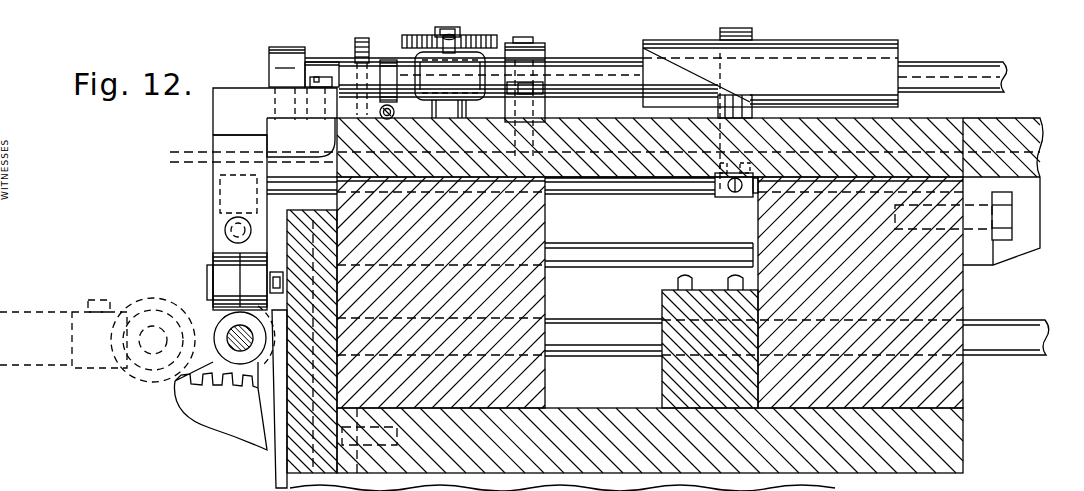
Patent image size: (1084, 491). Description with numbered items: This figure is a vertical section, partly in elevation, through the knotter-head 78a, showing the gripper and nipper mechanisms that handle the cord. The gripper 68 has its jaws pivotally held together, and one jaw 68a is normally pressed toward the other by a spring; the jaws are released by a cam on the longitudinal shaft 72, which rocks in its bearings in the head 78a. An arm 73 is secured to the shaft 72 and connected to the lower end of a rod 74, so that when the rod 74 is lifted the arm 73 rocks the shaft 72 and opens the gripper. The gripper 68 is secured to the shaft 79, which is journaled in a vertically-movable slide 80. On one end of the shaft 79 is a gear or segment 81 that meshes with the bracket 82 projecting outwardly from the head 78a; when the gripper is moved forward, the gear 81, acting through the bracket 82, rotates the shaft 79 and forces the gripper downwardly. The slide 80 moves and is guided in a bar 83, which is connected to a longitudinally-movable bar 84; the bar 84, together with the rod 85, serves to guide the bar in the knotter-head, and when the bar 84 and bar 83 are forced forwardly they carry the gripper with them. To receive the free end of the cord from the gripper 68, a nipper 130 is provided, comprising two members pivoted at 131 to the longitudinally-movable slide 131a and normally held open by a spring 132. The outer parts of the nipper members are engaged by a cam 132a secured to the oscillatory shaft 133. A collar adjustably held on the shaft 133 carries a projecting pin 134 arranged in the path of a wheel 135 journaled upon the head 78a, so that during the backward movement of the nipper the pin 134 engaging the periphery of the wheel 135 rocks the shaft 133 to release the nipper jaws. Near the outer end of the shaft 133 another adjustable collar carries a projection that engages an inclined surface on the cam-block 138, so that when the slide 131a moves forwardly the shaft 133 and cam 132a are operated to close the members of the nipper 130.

The gripper 68 is at (213, 199).
The gripper jaw 68a is at (253, 278).
The longitudinal shaft 72 is at (590, 188).
The arm 73 is at (722, 198).
The rod 74 is at (753, 33).
The knotter-head 78a is at (538, 393).
The gripper shaft 79 is at (236, 346).
The vertically-movable slide 80 is at (275, 467).
The gear segment 81 is at (210, 366).
The bracket 82 is at (230, 423).
The guide bar 83 is at (302, 196).
The longitudinally-movable bar 84 is at (608, 327).
The rod 85 is at (647, 250).
The nipper 130 is at (273, 91).
The pivot 131 is at (315, 118).
The longitudinally-movable slide 131a is at (1010, 132).
The spring 132 is at (394, 112).
The cam 132a is at (355, 40).
The oscillatory shaft 133 is at (598, 82).
The pin 134 is at (456, 43).
The wheel 135 is at (443, 42).
The cam-block 138 is at (890, 56).